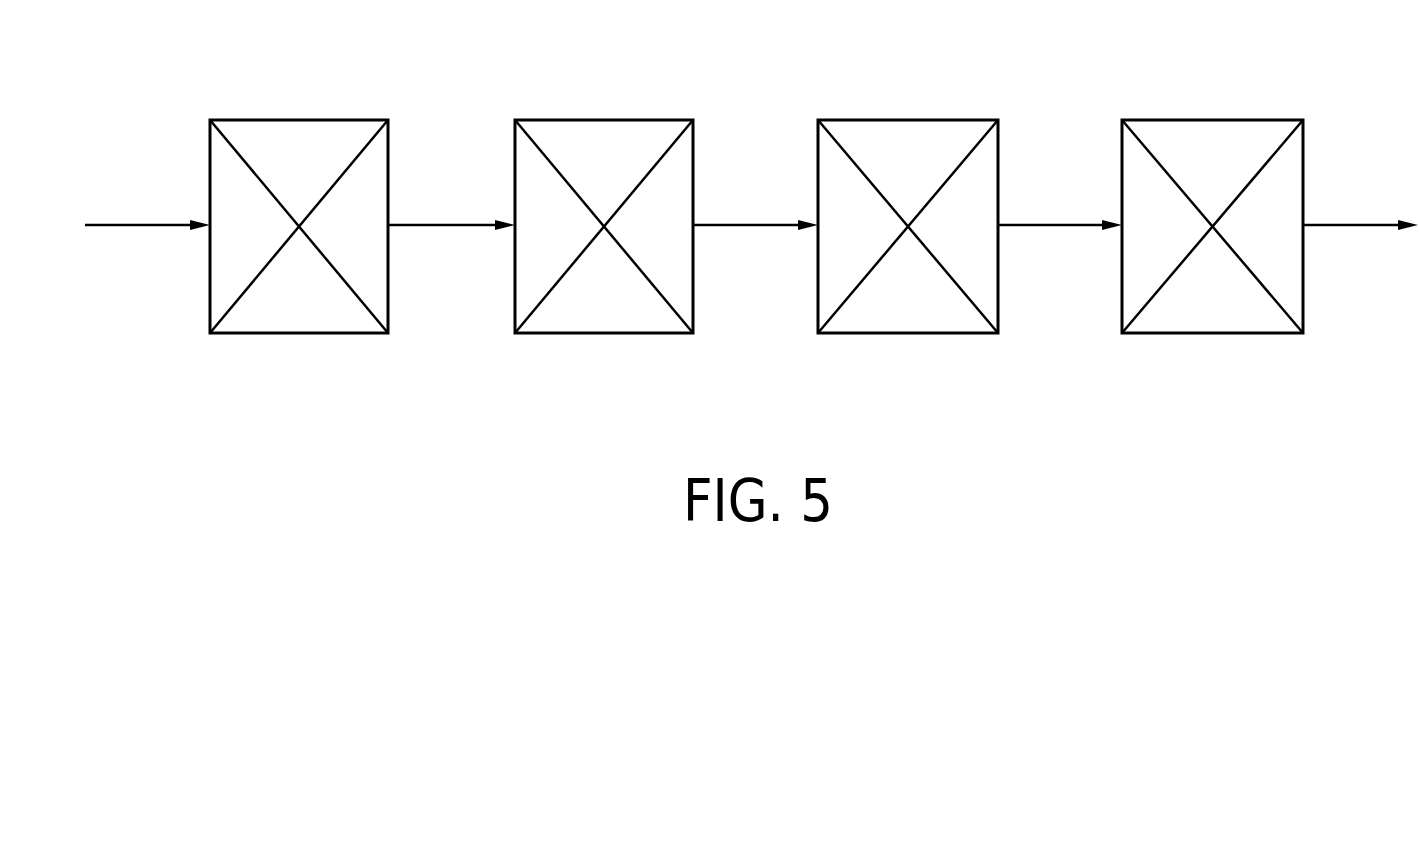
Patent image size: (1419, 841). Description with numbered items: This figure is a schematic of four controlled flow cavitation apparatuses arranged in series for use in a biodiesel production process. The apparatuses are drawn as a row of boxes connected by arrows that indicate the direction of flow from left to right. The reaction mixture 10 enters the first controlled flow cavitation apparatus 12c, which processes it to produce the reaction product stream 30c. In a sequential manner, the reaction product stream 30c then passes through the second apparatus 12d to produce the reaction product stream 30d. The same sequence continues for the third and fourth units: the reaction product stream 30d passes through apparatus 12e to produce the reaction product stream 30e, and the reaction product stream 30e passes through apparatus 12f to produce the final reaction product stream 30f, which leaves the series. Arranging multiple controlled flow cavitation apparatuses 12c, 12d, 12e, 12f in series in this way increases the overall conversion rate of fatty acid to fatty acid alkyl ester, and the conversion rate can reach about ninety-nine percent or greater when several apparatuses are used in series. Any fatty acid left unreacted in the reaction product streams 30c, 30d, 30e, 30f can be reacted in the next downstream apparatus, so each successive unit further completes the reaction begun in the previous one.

The reaction mixture 10 is at (150, 223).
The controlled flow cavitation apparatus 12c is at (305, 117).
The controlled flow cavitation apparatus 12d is at (610, 117).
The controlled flow cavitation apparatus 12e is at (913, 117).
The controlled flow cavitation apparatus 12f is at (1218, 117).
The reaction product stream 30c is at (452, 223).
The reaction product stream 30d is at (758, 223).
The reaction product stream 30e is at (1062, 223).
The reaction product stream 30f is at (1367, 223).